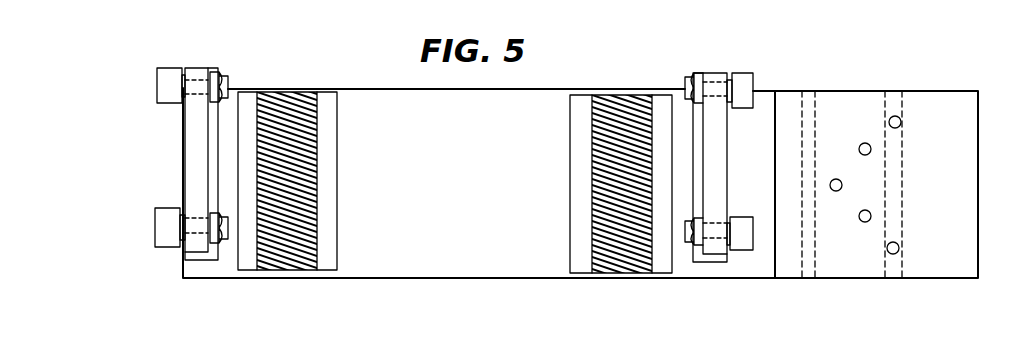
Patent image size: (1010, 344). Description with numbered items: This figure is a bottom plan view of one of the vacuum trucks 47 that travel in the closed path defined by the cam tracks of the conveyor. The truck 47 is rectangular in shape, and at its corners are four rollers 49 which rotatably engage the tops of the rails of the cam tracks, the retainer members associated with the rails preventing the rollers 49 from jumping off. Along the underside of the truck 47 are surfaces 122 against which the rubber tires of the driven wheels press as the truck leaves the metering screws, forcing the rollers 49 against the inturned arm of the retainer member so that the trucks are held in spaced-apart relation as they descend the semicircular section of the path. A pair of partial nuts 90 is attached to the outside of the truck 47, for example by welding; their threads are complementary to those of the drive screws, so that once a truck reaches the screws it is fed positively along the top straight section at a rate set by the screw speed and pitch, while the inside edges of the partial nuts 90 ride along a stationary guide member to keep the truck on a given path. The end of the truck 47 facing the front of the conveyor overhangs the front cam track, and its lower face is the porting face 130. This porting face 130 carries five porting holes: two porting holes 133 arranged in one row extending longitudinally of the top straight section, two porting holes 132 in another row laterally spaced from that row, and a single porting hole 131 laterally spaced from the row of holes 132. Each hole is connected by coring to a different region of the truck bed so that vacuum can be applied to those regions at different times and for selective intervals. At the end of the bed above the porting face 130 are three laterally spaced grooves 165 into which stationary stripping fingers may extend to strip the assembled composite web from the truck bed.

The truck 47 is at (476, 283).
The rollers 49 is at (167, 73).
The partial nuts 90 is at (273, 95).
The surfaces 122 is at (192, 146).
The porting face 130 is at (957, 105).
The porting hole 131 is at (836, 179).
The porting holes 132 is at (865, 155).
The porting holes 133 is at (898, 128).
The grooves 165 is at (853, 297).